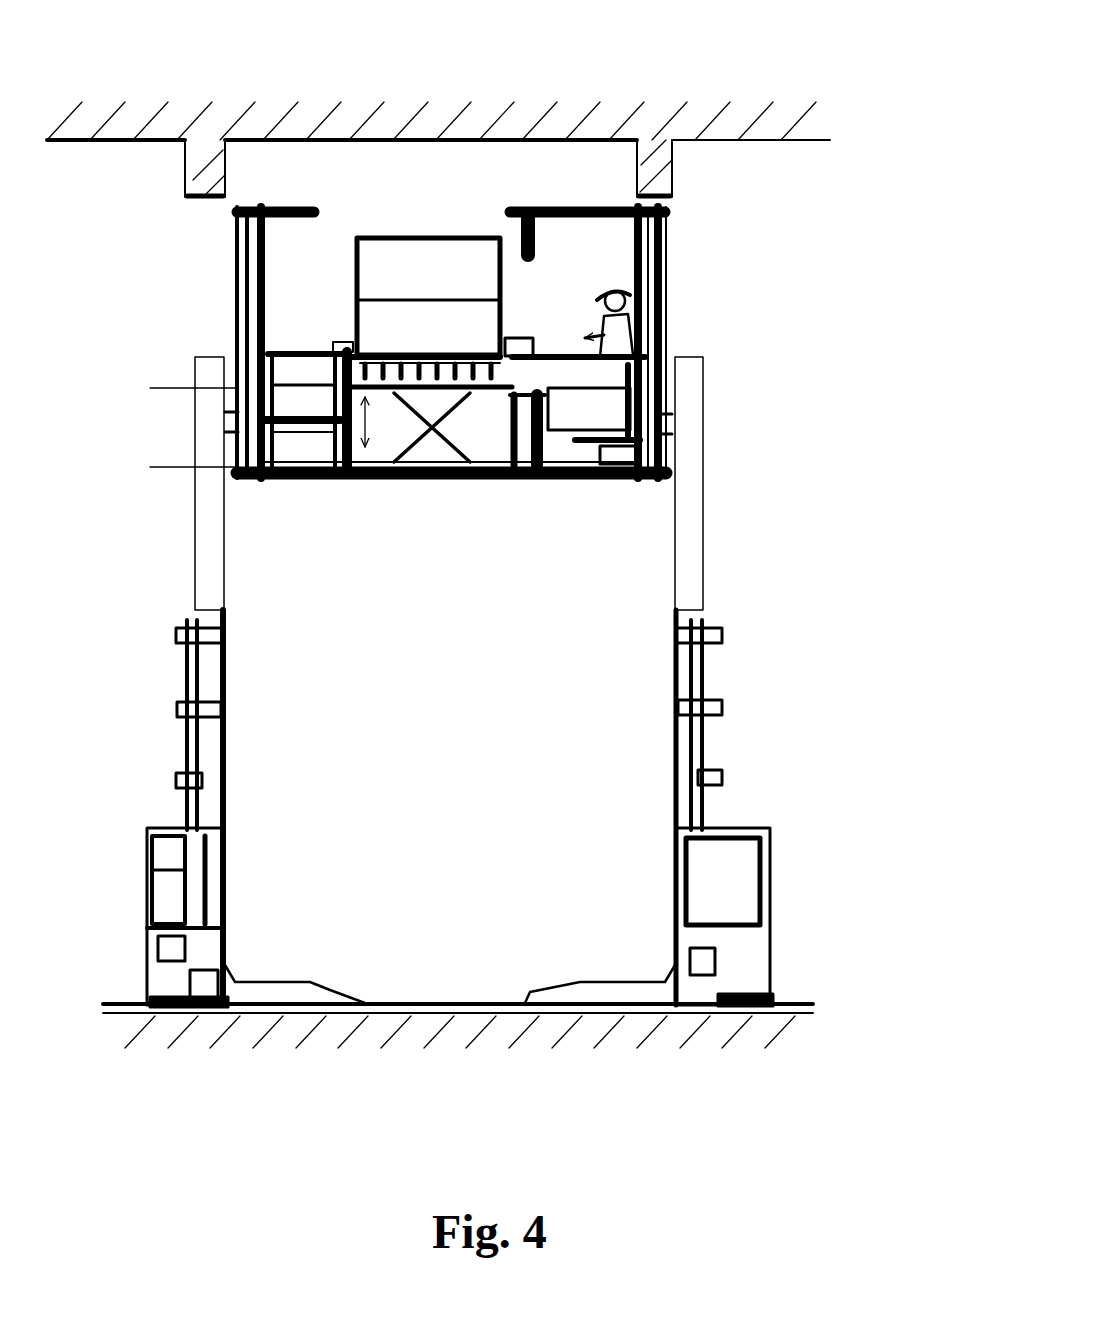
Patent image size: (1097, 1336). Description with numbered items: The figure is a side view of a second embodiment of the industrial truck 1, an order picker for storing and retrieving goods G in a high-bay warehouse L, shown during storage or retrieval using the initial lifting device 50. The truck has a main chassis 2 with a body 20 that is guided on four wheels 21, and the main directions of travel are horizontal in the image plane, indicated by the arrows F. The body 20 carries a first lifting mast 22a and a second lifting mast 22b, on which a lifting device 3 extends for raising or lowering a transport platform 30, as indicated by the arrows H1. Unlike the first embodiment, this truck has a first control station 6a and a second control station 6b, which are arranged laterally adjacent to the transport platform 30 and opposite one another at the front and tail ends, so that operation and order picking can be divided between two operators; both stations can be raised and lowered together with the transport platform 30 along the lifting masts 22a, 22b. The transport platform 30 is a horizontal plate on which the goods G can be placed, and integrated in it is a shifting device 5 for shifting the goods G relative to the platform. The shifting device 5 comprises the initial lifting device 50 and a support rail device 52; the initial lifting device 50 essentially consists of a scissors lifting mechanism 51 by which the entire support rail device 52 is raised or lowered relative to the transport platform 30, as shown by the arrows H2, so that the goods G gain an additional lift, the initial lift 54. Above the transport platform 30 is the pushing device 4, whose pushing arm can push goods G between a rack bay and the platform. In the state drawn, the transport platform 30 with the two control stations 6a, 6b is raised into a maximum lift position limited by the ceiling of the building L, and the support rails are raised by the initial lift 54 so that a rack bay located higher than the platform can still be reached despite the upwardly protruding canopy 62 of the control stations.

The industrial truck 1 is at (504, 656).
The main chassis 2 is at (335, 1020).
The lifting device 3 is at (652, 500).
The pushing device 4 is at (547, 250).
The shifting device 5 is at (331, 339).
The first control station 6a is at (305, 350).
The second control station 6b is at (640, 328).
The body 20 is at (283, 1002).
The wheel 21 is at (178, 1005).
The first lifting mast 22a is at (210, 562).
The second lifting mast 22b is at (672, 580).
The transport platform 30 is at (358, 482).
The initial lifting device 50 is at (432, 470).
The scissors lifting mechanism 51 is at (470, 482).
The support rail device 52 is at (470, 355).
The initial lift 54 is at (160, 392).
The canopy 62 is at (583, 206).
The goods G is at (405, 263).
The building, high-bay warehouse L is at (677, 208).
The raising/lowering of transport platform H1 is at (268, 720).
The raising/lowering of support rail H2 is at (320, 482).
The main direction of travel of industrial truck F is at (948, 900).